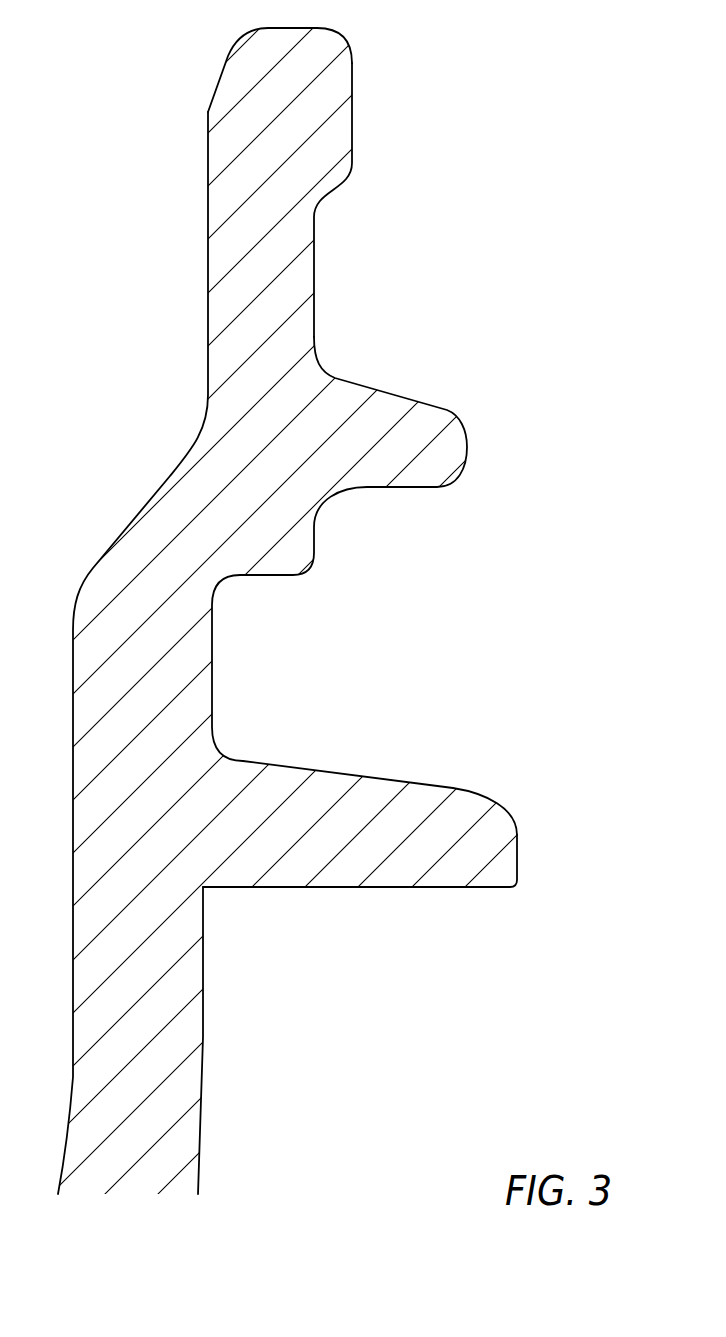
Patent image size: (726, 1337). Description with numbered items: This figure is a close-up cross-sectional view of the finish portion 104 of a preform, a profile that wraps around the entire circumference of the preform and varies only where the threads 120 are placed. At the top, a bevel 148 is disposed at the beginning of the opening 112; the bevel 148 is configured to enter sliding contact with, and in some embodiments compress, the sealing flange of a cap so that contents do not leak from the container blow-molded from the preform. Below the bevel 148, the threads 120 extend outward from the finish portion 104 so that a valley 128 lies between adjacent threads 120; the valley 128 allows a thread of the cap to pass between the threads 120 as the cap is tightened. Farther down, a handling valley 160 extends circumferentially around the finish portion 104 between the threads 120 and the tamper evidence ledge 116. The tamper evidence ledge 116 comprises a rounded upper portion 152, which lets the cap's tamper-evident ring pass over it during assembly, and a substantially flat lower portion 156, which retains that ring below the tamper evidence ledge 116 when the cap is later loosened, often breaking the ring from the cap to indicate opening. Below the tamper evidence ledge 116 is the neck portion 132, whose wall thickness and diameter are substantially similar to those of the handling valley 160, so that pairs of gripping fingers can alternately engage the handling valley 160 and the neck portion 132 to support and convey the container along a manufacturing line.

The finish portion 104 is at (363, 600).
The opening 112 is at (63, 130).
The tamper evidence ledge 116 is at (517, 860).
The threads 120 is at (467, 447).
The valley 128 is at (315, 278).
The neck portion 132 is at (203, 974).
The bevel 148 is at (218, 80).
The rounded upper portion 152 is at (420, 782).
The flat lower portion 156 is at (390, 887).
The handling valley 160 is at (212, 663).